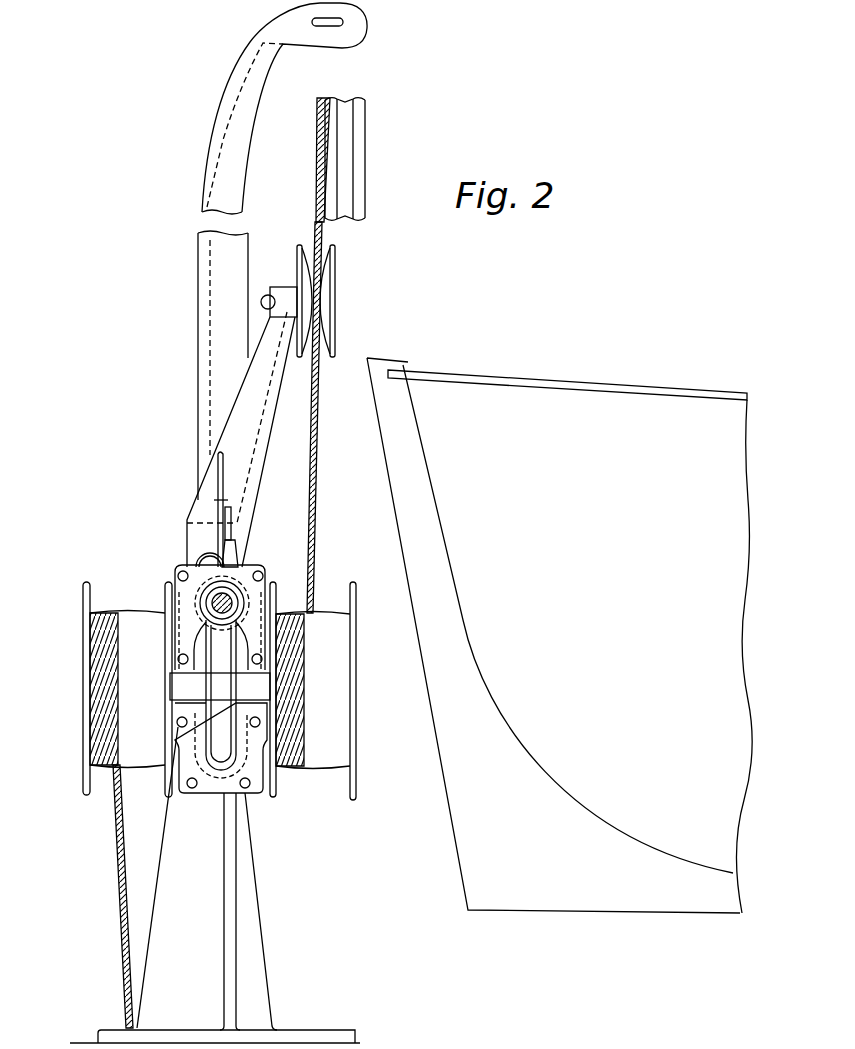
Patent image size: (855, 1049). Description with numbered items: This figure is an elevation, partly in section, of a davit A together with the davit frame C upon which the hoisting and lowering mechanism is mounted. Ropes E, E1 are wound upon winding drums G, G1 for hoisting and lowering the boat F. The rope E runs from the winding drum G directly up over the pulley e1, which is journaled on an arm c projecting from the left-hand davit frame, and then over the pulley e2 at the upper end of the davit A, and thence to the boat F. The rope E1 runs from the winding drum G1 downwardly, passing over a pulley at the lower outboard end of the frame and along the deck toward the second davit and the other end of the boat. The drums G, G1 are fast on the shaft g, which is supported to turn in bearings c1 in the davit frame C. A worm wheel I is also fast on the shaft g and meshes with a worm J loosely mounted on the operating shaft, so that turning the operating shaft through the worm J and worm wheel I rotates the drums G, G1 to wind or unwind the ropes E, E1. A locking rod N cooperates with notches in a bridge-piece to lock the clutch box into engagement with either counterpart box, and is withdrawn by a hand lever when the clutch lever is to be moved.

The davit A is at (200, 348).
The pulley e2 is at (358, 130).
The pulley e1 is at (331, 320).
The rope E is at (317, 402).
The arm c is at (240, 432).
The locking rod N is at (230, 525).
The worm J is at (258, 578).
The shaft g is at (258, 730).
The worm wheel I is at (222, 757).
The winding drum G1 is at (85, 755).
The winding drum G is at (352, 720).
The rope E1 is at (120, 888).
The bearing c1 is at (182, 710).
The supporting frame C is at (236, 925).
The boat F is at (559, 635).